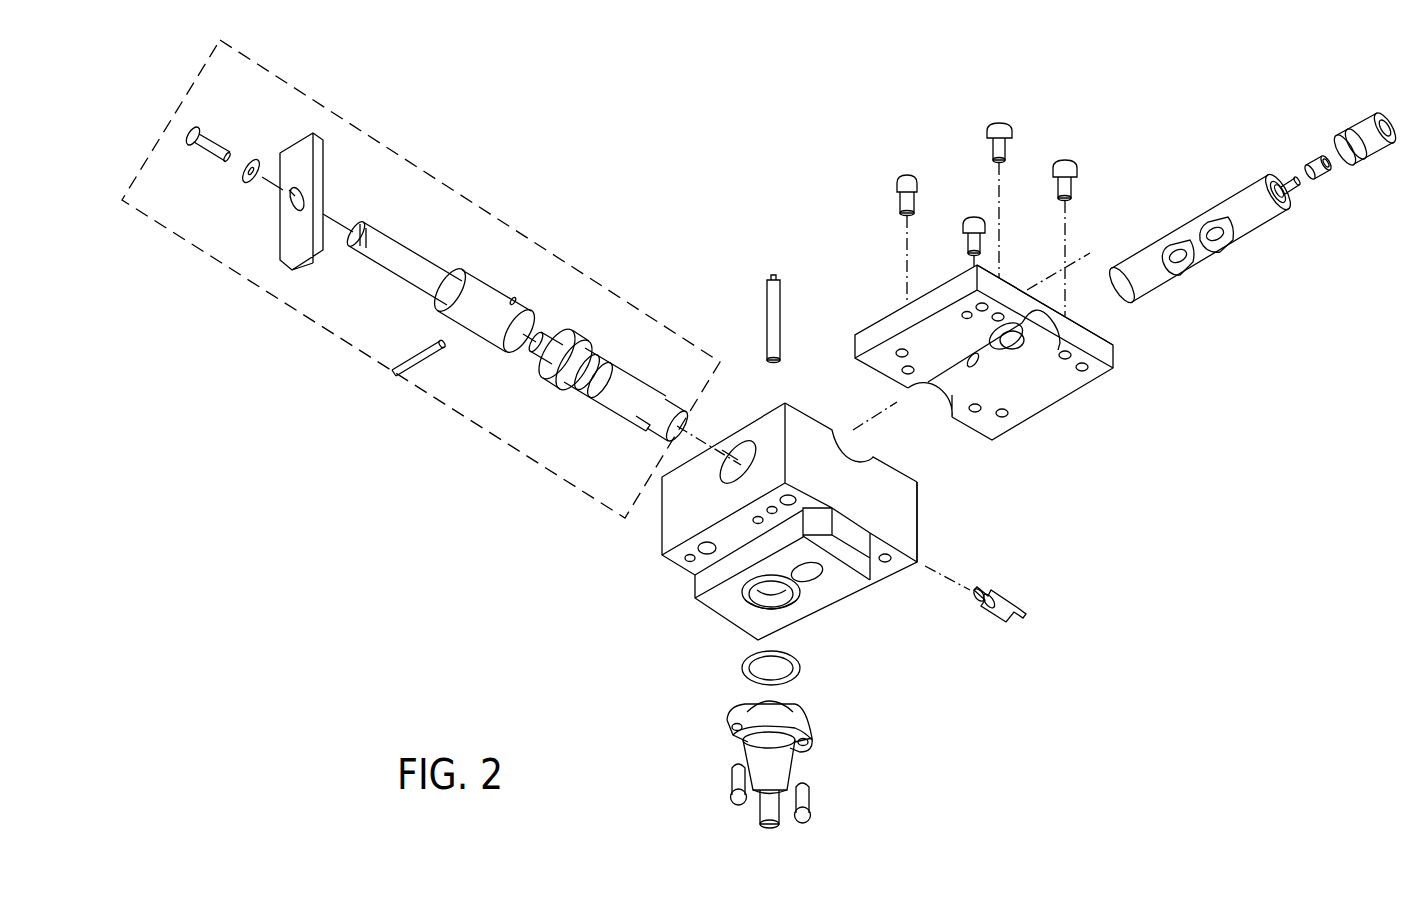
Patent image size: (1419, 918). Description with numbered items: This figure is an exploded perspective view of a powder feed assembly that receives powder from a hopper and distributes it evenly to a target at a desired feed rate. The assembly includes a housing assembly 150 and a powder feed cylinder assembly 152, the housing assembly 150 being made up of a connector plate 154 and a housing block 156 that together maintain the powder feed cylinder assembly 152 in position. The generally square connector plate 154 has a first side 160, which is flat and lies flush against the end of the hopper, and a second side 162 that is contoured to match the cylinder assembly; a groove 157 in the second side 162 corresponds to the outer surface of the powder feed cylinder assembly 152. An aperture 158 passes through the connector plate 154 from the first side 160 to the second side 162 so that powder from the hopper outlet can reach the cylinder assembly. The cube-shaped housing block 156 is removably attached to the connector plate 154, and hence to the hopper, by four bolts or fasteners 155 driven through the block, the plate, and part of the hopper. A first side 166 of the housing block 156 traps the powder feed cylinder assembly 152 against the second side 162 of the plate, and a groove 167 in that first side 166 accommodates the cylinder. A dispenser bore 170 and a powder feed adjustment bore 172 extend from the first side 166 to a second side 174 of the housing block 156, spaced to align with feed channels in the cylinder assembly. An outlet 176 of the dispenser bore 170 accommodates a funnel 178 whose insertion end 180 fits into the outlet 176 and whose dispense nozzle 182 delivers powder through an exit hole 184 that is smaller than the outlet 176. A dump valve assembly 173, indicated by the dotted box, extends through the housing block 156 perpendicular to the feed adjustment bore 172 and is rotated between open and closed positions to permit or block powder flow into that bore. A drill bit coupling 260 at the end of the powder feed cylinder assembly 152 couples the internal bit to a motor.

The housing assembly 150 is at (814, 262).
The powder feed cylinder assembly 152 is at (1223, 198).
The connector plate 154 is at (983, 351).
The bolts or fasteners 155 is at (902, 173).
The housing block 156 is at (913, 518).
The groove 157 is at (955, 395).
The aperture 158 is at (1010, 340).
The first side 160 is at (1012, 280).
The second side 162 is at (1072, 378).
The first side 166 is at (822, 511).
The groove 167 is at (852, 443).
The dispenser bore 170 is at (770, 583).
The powder feed adjustment bore 172 is at (813, 567).
The dump valve assembly 173 is at (487, 190).
The second side 174 is at (860, 570).
The outlet 176 is at (777, 597).
The funnel 178 is at (766, 772).
The insertion end 180 is at (793, 706).
The dispense nozzle 182 is at (780, 826).
The exit hole 184 is at (766, 828).
The drill bit coupling 260 is at (1380, 113).